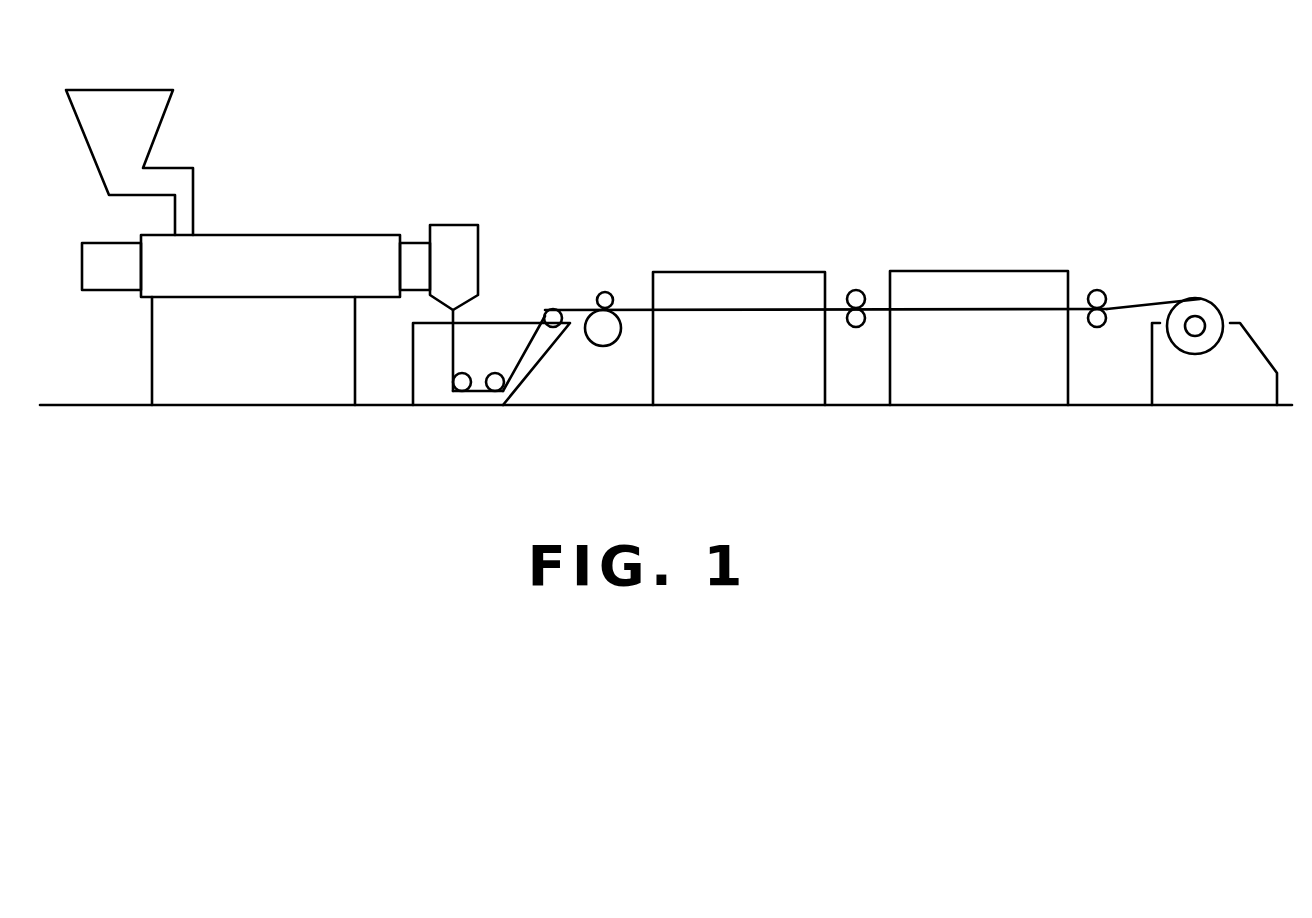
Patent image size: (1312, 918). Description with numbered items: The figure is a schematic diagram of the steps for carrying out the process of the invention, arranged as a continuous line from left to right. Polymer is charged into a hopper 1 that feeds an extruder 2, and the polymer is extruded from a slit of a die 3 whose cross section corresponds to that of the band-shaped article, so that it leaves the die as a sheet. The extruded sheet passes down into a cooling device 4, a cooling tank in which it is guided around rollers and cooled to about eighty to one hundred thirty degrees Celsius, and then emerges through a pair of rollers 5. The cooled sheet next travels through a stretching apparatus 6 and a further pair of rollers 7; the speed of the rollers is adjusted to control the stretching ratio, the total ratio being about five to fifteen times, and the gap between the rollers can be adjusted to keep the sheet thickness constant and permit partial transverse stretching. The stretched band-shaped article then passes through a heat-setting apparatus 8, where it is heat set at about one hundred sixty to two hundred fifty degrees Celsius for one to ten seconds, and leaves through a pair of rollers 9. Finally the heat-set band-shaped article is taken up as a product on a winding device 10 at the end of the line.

The hopper 1 is at (118, 107).
The extruder 2 is at (218, 250).
The die 3 is at (467, 252).
The cooling device 4 is at (435, 393).
The pair of rollers 5 is at (607, 297).
The stretching apparatus 6 is at (748, 285).
The pair of rollers 7 is at (856, 298).
The heat-setting apparatus 8 is at (967, 282).
The pair of rollers 9 is at (1097, 290).
The winding device 10 is at (1238, 343).